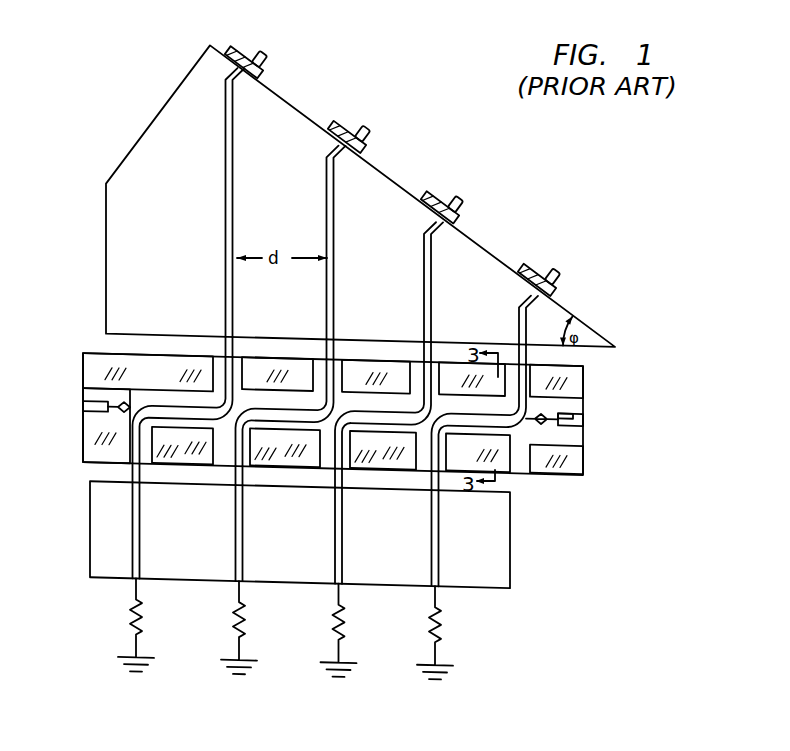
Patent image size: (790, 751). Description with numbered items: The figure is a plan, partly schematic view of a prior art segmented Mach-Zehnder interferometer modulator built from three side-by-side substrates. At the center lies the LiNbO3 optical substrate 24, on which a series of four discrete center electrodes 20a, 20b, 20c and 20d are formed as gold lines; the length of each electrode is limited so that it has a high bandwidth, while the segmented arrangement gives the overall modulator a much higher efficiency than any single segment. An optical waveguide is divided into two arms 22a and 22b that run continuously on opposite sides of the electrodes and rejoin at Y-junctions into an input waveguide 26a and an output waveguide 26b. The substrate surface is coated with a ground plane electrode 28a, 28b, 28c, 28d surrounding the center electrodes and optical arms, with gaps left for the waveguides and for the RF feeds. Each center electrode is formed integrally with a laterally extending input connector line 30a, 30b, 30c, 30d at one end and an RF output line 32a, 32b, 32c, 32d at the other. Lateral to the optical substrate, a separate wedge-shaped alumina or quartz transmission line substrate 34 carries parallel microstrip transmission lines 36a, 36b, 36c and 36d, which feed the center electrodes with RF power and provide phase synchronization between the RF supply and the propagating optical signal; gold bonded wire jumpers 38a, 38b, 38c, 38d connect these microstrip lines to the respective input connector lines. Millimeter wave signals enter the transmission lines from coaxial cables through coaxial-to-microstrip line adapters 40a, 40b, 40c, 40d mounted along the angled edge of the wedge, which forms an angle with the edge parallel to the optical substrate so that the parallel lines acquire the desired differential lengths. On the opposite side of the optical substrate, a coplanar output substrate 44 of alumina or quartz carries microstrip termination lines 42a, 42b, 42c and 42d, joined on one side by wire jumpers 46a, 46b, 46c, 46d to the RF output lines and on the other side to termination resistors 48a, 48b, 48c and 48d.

The center electrode 20a is at (466, 392).
The center electrode 20b is at (387, 392).
The center electrode 20c is at (300, 392).
The center electrode 20d is at (200, 405).
The optical arm 22a is at (583, 400).
The optical arm 22b is at (583, 475).
The substrate 24 is at (70, 423).
The input waveguide 26a is at (583, 440).
The output waveguide 26b is at (97, 407).
The ground plane electrode 28a is at (585, 458).
The ground plane electrode 28b is at (410, 480).
The ground plane electrode 28c is at (305, 470).
The ground plane electrode 28d is at (88, 365).
The input connector line 30a is at (585, 378).
The input connector line 30b is at (438, 365).
The input connector line 30c is at (340, 365).
The input connector line 30d is at (195, 362).
The RF output line 32a is at (525, 470).
The RF output line 32b is at (378, 470).
The RF output line 32c is at (205, 470).
The RF output line 32d is at (118, 450).
The transmission line substrate 34 is at (106, 199).
The microstrip transmission line 36a is at (516, 310).
The microstrip transmission line 36b is at (422, 245).
The microstrip transmission line 36c is at (324, 198).
The microstrip transmission line 36d is at (224, 155).
The wire jumper 38a is at (540, 352).
The wire jumper 38b is at (426, 350).
The wire jumper 38c is at (326, 352).
The wire jumper 38d is at (223, 350).
The coaxial-to-microstrip line adapter 40a is at (554, 288).
The coaxial-to-microstrip line adapter 40b is at (457, 212).
The coaxial-to-microstrip line adapter 40c is at (362, 140).
The coaxial-to-microstrip line adapter 40d is at (258, 66).
The microstrip termination line 42a is at (438, 560).
The microstrip termination line 42b is at (320, 586).
The microstrip termination line 42c is at (229, 586).
The microstrip termination line 42d is at (126, 560).
The output substrate 44 is at (90, 554).
The wire jumper 46a is at (440, 475).
The wire jumper 46b is at (307, 480).
The wire jumper 46c is at (220, 478).
The wire jumper 46d is at (133, 470).
The termination resistor 48a is at (445, 622).
The termination resistor 48b is at (325, 625).
The termination resistor 48c is at (226, 625).
The termination resistor 48d is at (128, 620).